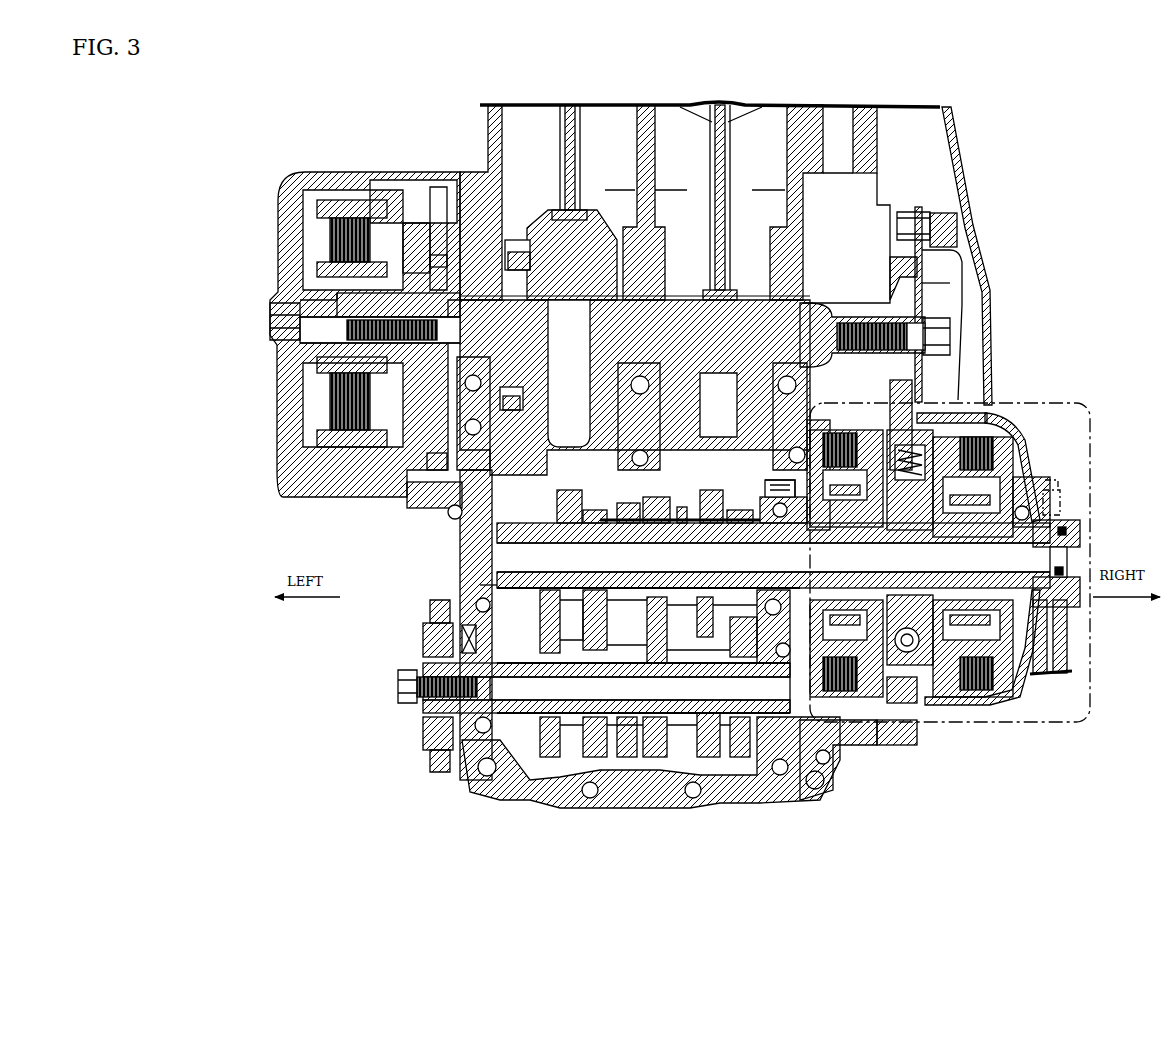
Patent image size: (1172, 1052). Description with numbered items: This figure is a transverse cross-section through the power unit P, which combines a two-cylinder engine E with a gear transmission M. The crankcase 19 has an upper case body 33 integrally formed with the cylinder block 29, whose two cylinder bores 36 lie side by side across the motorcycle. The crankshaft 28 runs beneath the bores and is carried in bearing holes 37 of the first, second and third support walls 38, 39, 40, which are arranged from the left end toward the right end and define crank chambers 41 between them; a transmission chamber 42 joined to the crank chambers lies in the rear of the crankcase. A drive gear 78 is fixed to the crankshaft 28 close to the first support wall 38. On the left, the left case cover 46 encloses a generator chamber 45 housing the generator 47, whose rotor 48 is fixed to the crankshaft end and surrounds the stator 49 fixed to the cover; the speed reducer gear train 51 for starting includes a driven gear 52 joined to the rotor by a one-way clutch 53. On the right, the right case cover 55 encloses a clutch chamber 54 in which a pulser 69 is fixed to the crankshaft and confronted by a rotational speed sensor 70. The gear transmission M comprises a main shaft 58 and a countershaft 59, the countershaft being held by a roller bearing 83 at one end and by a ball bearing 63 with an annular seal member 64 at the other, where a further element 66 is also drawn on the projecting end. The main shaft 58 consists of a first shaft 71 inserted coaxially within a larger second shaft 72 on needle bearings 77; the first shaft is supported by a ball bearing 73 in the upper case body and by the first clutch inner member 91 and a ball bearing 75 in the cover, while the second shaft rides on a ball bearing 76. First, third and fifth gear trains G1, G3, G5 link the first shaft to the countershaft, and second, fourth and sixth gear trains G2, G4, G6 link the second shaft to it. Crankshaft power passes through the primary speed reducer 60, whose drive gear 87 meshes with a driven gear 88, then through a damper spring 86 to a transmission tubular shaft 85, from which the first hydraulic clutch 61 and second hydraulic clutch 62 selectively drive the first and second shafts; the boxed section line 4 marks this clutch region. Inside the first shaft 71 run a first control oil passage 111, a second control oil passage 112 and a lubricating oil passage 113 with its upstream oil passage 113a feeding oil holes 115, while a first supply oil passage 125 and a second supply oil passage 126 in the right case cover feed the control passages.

The crankcase 19 is at (456, 556).
The crankshaft 28 is at (815, 305).
The cylinder block 29 is at (488, 126).
The upper case body 33 is at (463, 538).
The cylinder bores 36 is at (637, 135).
The bearing holes 37 is at (488, 356).
The first support wall 38 is at (475, 200).
The second support wall 39 is at (625, 228).
The third support wall 40 is at (776, 228).
The crank chambers 41 is at (562, 353).
The transmission chamber 42 is at (470, 491).
The generator chamber 45 is at (412, 190).
The left case cover 46 is at (358, 173).
The generator 47 is at (350, 465).
The rotor 48 is at (338, 463).
The stator 49 is at (337, 218).
The speed reducer gear train 51 is at (382, 470).
The driven gear 52 is at (460, 465).
The one-way clutch 53 is at (418, 262).
The clutch chamber 54 is at (857, 393).
The right case cover 55 is at (988, 380).
The main shaft 58 is at (694, 518).
The countershaft 59 is at (425, 650).
The primary speed reducer 60 is at (928, 405).
The first hydraulic clutch 61 is at (1000, 680).
The second hydraulic clutch 62 is at (840, 700).
The ball bearing 63 is at (470, 735).
The annular seal member 64 is at (466, 630).
The sprocket 66 is at (423, 735).
The pulser 69 is at (925, 283).
The rotational speed sensor 70 is at (915, 210).
The first shaft 71 is at (612, 510).
The second shaft 72 is at (740, 523).
The ball bearing 73 is at (480, 586).
The ball bearing 75 is at (1035, 515).
The ball bearing 76 is at (800, 490).
The needle bearings 77 is at (653, 505).
The drive gear 78 is at (515, 250).
The roller bearing 83 is at (812, 757).
The transmission tubular shaft 85 is at (892, 490).
The damper spring 86 is at (900, 655).
The drive gear 87 is at (893, 263).
The driven gear 88 is at (905, 705).
The first clutch inner member 91 is at (1010, 483).
The first control oil passage 111 is at (1050, 560).
The second control oil passage 112 is at (1067, 537).
The lubricating oil passage 113 is at (515, 567).
The upstream oil passage 113a is at (594, 688).
The oil holes 115 is at (610, 546).
The first supply oil passage 125 is at (1065, 648).
The second supply oil passage 126 is at (1068, 503).
The section line 4 is at (1098, 744).
The engine E is at (980, 215).
The gear transmission M is at (595, 503).
The power unit P is at (920, 738).
The first gear train G1 is at (500, 786).
The second gear train G2 is at (790, 792).
The third gear train G3 is at (555, 499).
The fourth gear train G4 is at (668, 760).
The fifth gear train G5 is at (612, 762).
The sixth gear train G6 is at (713, 468).